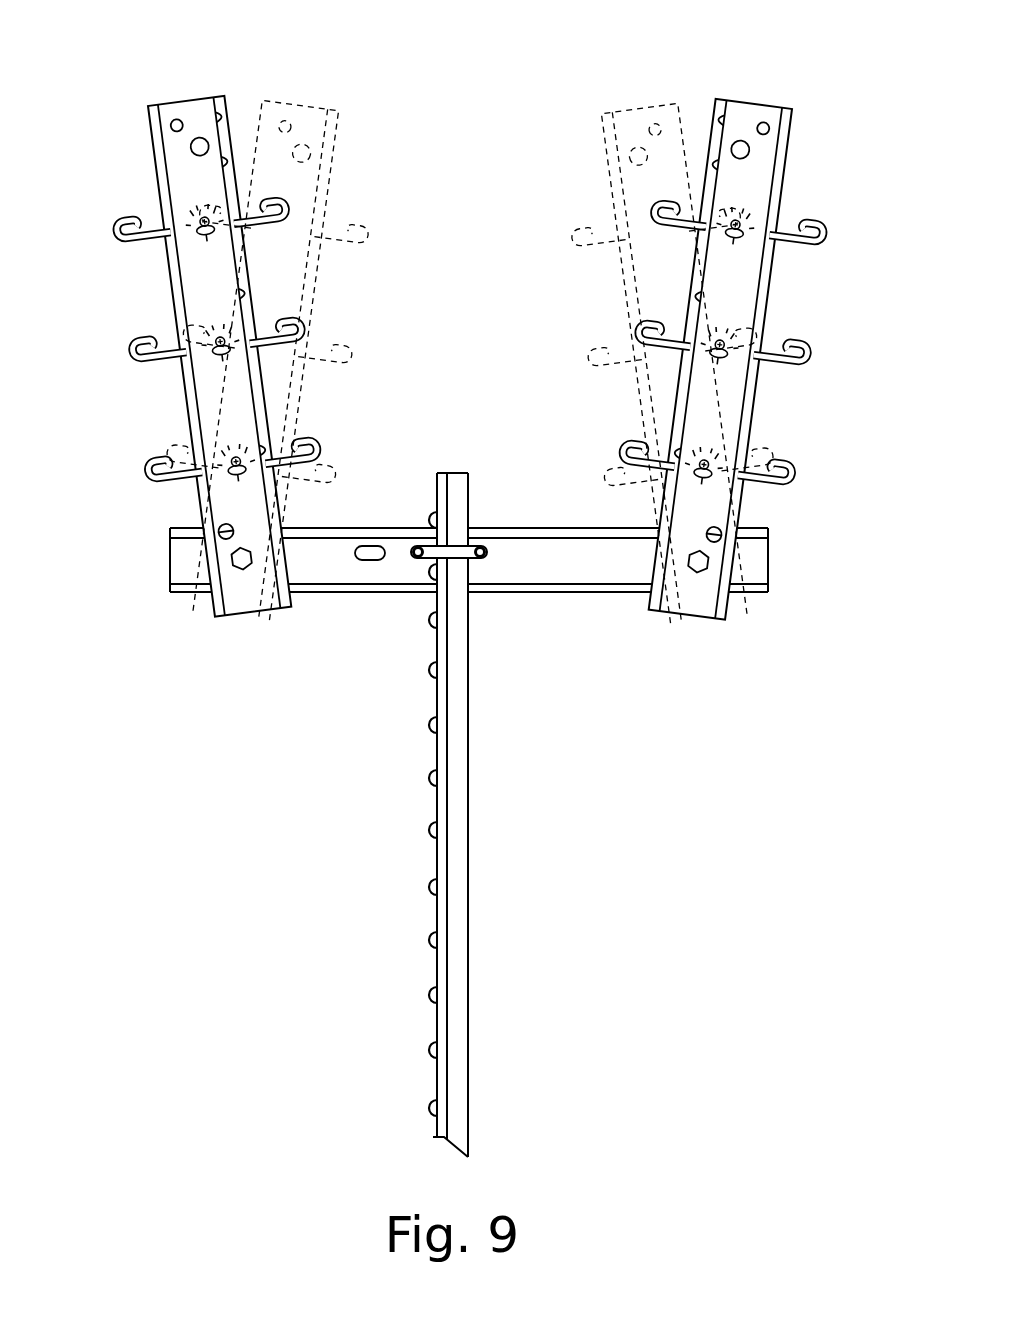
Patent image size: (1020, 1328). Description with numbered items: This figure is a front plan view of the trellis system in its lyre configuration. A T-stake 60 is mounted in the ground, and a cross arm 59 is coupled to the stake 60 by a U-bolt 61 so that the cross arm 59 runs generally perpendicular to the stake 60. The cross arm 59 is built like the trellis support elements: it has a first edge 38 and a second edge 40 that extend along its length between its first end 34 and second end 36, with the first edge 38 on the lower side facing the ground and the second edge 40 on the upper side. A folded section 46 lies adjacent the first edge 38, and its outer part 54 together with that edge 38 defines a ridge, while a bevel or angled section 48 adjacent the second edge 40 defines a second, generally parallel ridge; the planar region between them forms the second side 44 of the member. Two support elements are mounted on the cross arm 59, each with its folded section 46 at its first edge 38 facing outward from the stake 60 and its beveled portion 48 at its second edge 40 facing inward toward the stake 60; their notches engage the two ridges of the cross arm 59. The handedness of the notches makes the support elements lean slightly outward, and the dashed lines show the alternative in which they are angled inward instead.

The first end 34 is at (190, 98).
The second end 36 is at (765, 106).
The first edge 38 is at (155, 177).
The second edge 40 is at (283, 557).
The second side 44 is at (597, 571).
The folded section 46 is at (168, 280).
The angled section 48 is at (226, 102).
The outer part of folded section 54 is at (362, 594).
The cross arm 59 is at (526, 576).
The T-stake 60 is at (469, 757).
The U-bolt 61 is at (456, 550).